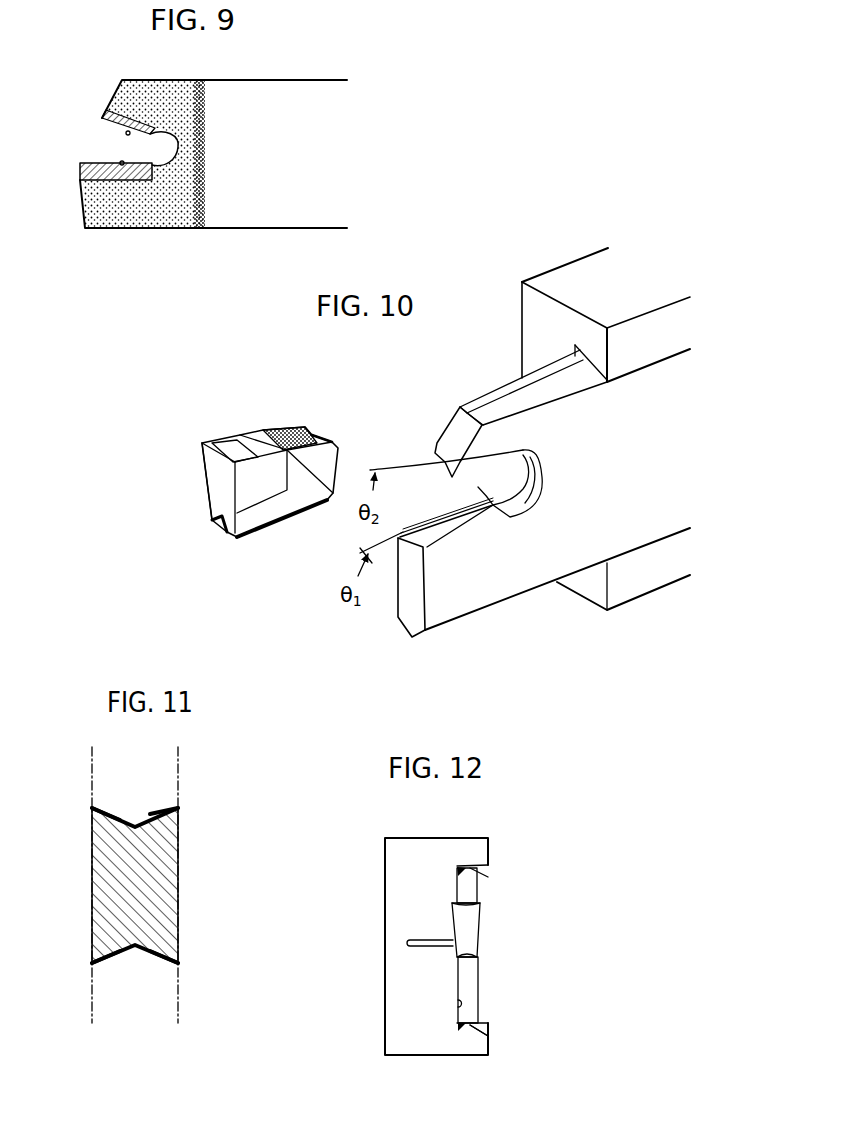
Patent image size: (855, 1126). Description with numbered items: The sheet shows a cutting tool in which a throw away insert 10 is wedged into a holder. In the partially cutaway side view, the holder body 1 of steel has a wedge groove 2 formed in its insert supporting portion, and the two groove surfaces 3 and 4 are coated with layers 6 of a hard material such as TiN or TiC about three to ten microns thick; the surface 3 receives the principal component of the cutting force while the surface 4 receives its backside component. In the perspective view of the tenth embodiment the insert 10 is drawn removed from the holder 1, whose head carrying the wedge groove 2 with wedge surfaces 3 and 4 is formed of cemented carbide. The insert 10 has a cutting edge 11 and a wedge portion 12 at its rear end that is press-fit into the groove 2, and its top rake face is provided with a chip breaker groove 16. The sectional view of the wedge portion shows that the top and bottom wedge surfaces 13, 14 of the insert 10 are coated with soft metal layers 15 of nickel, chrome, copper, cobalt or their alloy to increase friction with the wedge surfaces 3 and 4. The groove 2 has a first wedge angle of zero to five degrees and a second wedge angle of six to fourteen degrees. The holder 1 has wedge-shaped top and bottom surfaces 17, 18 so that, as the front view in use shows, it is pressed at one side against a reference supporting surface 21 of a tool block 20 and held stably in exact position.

In FIG. 9, the holder body 1 is at (261, 78).
In FIG. 10, the holder body 1 is at (466, 622).
In FIG. 12, the holder body 1 is at (480, 990).
In FIG. 9, the wedge groove 2 is at (130, 149).
In FIG. 10, the wedge groove 2 is at (470, 511).
In FIG. 9, the wedge groove surface 3 is at (128, 181).
In FIG. 10, the wedge groove surface 3 is at (470, 521).
In FIG. 11, the wedge groove surface 3 is at (92, 970).
In FIG. 9, the wedge groove surface 4 is at (138, 132).
In FIG. 10, the wedge groove surface 4 is at (437, 438).
In FIG. 11, the wedge groove surface 4 is at (92, 803).
In FIG. 9, the hard material layer 6 is at (120, 162).
In FIG. 10, the throw away insert 10 is at (253, 481).
In FIG. 11, the throw away insert 10 is at (132, 889).
In FIG. 12, the throw away insert 10 is at (481, 935).
In FIG. 10, the cutting edge 11 is at (221, 457).
In FIG. 10, the wedge portion 12 is at (298, 494).
In FIG. 10, the wedge surface 13 is at (222, 526).
In FIG. 11, the wedge surface 13 is at (150, 967).
In FIG. 10, the wedge surface 14 is at (310, 432).
In FIG. 11, the wedge surface 14 is at (153, 808).
In FIG. 10, the soft metal layer 15 is at (297, 431).
In FIG. 11, the soft metal layer 15 is at (117, 809).
In FIG. 10, the chip breaker groove 16 is at (234, 452).
In FIG. 10, the top surface of holder 17 is at (497, 406).
In FIG. 12, the top surface of holder 17 is at (470, 869).
In FIG. 10, the bottom surface of holder 18 is at (417, 638).
In FIG. 12, the bottom surface of holder 18 is at (472, 1026).
In FIG. 10, the tool block 20 is at (550, 270).
In FIG. 12, the tool block 20 is at (444, 835).
In FIG. 12, the reference supporting surface 21 is at (458, 1005).